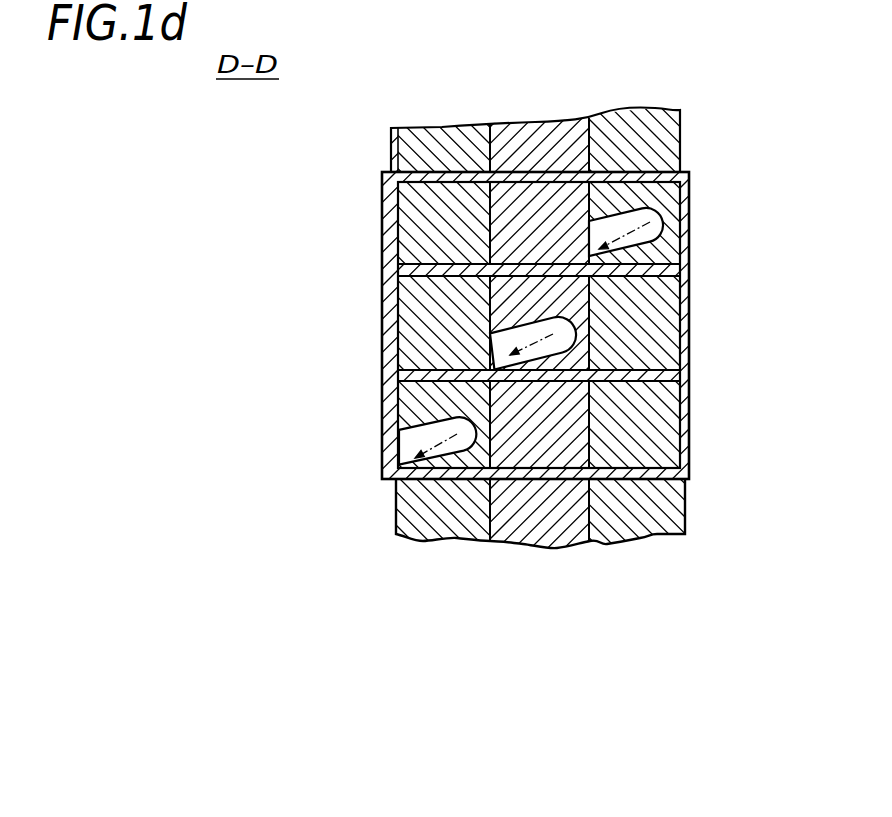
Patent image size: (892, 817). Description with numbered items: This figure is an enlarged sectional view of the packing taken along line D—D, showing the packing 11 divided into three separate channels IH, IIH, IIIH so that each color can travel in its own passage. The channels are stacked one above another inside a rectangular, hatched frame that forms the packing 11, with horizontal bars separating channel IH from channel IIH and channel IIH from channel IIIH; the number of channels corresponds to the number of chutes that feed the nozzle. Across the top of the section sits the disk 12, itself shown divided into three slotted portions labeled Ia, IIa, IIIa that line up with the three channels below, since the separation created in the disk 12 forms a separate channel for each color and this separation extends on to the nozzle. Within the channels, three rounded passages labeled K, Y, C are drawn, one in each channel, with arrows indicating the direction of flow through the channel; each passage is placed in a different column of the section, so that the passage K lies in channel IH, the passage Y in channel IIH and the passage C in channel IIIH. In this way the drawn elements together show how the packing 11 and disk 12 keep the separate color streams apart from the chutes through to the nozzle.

The packing 11 is at (688, 338).
The disk 12 is at (563, 168).
The channel IH is at (481, 223).
The channel IIH is at (482, 323).
The channel IIIH is at (478, 403).
The first column section Ia is at (633, 138).
The second column section IIa is at (536, 138).
The third column section IIIa is at (442, 138).
The black ink passage K is at (626, 232).
The yellow ink passage Y is at (533, 343).
The cyan ink passage C is at (437, 440).